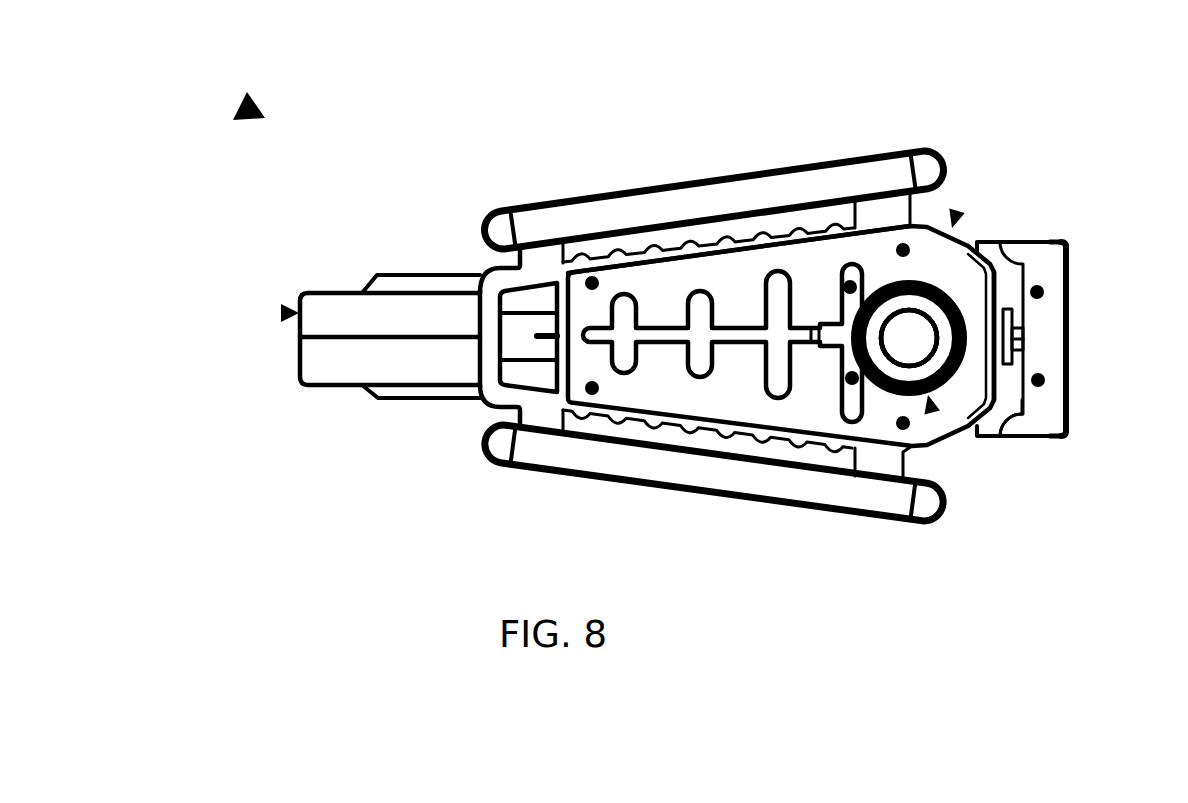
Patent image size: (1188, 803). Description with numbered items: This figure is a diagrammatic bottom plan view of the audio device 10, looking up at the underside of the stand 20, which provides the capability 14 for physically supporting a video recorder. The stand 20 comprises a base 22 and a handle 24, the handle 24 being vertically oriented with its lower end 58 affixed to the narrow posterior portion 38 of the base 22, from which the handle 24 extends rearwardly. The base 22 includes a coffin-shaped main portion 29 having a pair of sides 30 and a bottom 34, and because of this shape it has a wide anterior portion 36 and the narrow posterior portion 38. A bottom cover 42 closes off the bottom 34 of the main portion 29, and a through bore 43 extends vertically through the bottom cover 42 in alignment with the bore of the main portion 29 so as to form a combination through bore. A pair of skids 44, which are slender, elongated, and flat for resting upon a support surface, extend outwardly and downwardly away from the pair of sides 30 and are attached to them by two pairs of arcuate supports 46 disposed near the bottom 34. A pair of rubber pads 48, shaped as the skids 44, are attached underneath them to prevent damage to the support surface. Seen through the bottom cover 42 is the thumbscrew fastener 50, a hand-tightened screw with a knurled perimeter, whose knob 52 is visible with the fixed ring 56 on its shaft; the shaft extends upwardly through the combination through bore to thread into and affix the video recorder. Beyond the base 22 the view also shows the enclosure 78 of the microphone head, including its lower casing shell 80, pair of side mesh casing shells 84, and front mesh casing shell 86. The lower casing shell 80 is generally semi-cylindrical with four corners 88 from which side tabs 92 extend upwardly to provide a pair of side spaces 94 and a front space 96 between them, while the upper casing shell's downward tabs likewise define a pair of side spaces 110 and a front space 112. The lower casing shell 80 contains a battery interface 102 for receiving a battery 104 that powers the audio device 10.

The audio device 10 is at (242, 103).
The capability for physically supporting a video recorder 14 is at (935, 412).
The stand 20 is at (283, 312).
The base 22 is at (958, 210).
The handle 24 is at (388, 272).
The main portion 29 is at (828, 222).
The pair of sides 30 is at (648, 248).
The bottom 34 is at (715, 237).
The wide anterior portion 36 is at (893, 207).
The narrow posterior portion 38 is at (498, 272).
The bottom cover 42 is at (737, 293).
The through bore 43 is at (910, 340).
The pair of skids 44 is at (493, 228).
The arcuate supports 46 is at (540, 255).
The pair of rubber pads 48 is at (587, 217).
The thumbscrew fastener 50 is at (892, 325).
The knob 52 is at (917, 292).
The fixed ring 56 is at (917, 343).
The lower end 58 is at (487, 318).
The enclosure 78 is at (1088, 355).
The lower casing shell 80 is at (1033, 427).
The pair of side mesh casing shells 84 is at (1015, 248).
The front mesh casing shell 86 is at (1111, 339).
The four corners 88 is at (1113, 329).
The side tabs 92 is at (1068, 238).
The pair of side spaces 94 is at (1000, 252).
The front space 96 is at (1068, 362).
The battery interface 102 is at (1095, 468).
The battery 104 is at (1048, 427).
The pair of side spaces 110 is at (1010, 268).
The front space 112 is at (1070, 260).